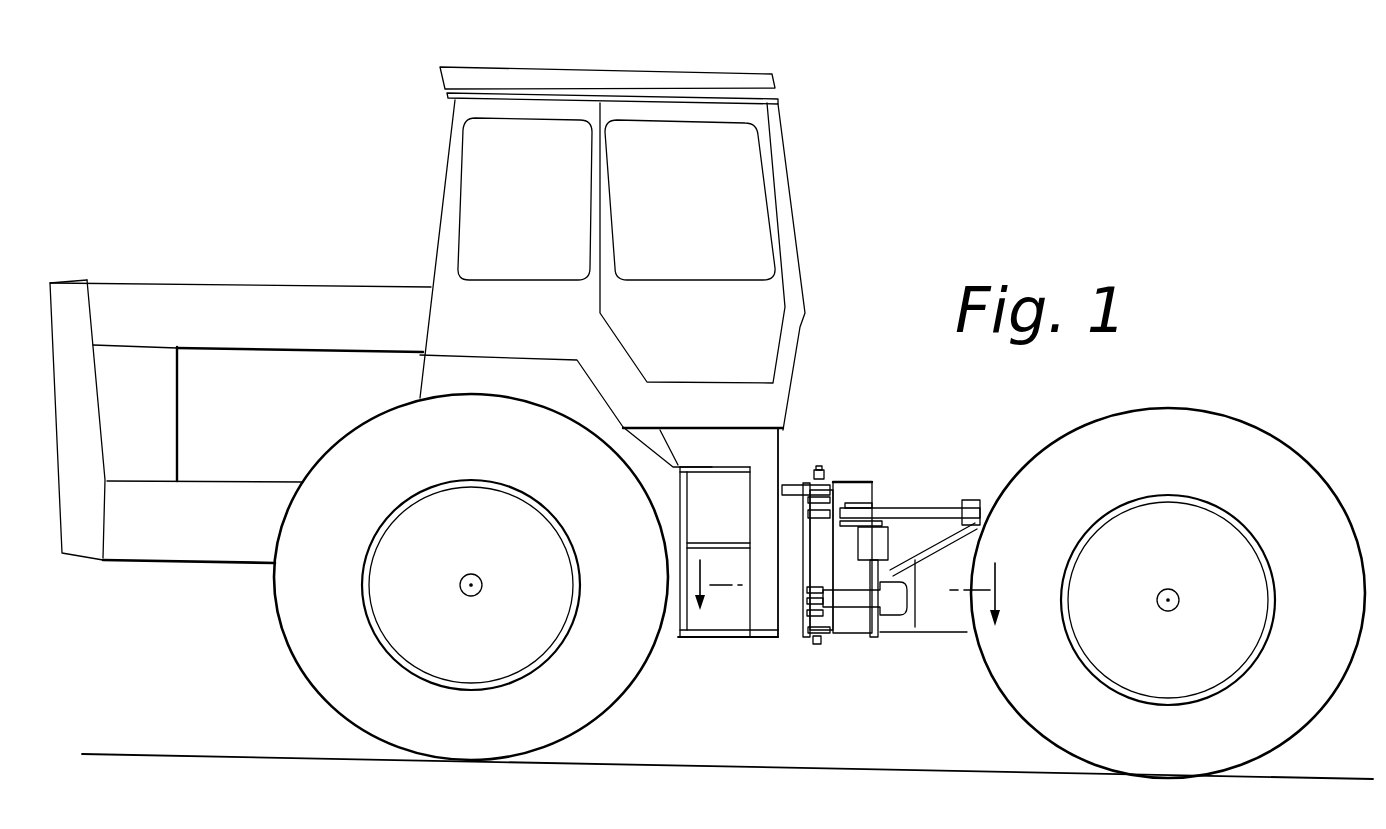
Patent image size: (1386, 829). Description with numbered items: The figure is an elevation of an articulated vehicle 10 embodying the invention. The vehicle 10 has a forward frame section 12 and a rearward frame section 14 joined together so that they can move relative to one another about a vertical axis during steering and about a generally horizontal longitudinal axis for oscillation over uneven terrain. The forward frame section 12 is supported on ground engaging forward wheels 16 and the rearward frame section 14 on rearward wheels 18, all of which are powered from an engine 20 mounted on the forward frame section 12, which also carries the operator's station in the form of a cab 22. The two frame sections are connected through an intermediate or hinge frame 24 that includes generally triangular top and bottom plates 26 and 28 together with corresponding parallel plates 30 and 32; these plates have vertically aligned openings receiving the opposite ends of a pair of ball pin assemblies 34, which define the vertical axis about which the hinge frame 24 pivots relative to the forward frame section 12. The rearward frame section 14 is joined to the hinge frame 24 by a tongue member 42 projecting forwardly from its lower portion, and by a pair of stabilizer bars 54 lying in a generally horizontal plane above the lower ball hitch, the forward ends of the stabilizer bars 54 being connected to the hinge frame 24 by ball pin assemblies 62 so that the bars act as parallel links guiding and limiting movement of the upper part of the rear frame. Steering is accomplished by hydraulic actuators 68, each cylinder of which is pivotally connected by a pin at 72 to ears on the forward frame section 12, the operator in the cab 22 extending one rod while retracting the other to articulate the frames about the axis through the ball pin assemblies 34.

The vehicle 10 is at (713, 422).
The forward frame section 12 is at (686, 650).
The rearward frame section 14 is at (849, 566).
The forward wheels 16 is at (307, 660).
The rearward wheels 18 is at (1277, 710).
The engine 20 is at (222, 455).
The cab 22 is at (455, 168).
The hinge frame 24 is at (854, 468).
The top plate 26 is at (865, 483).
The bottom plate 28 is at (845, 634).
The parallel plate 30 is at (800, 503).
The parallel plate 32 is at (805, 607).
The ball pin assemblies 34 is at (805, 478).
The tongue member 42 is at (882, 627).
The stabilizer bars 54 is at (938, 510).
The ball pin assemblies 62 is at (875, 494).
The hydraulic actuators 68 is at (861, 600).
The pin 72 is at (812, 585).